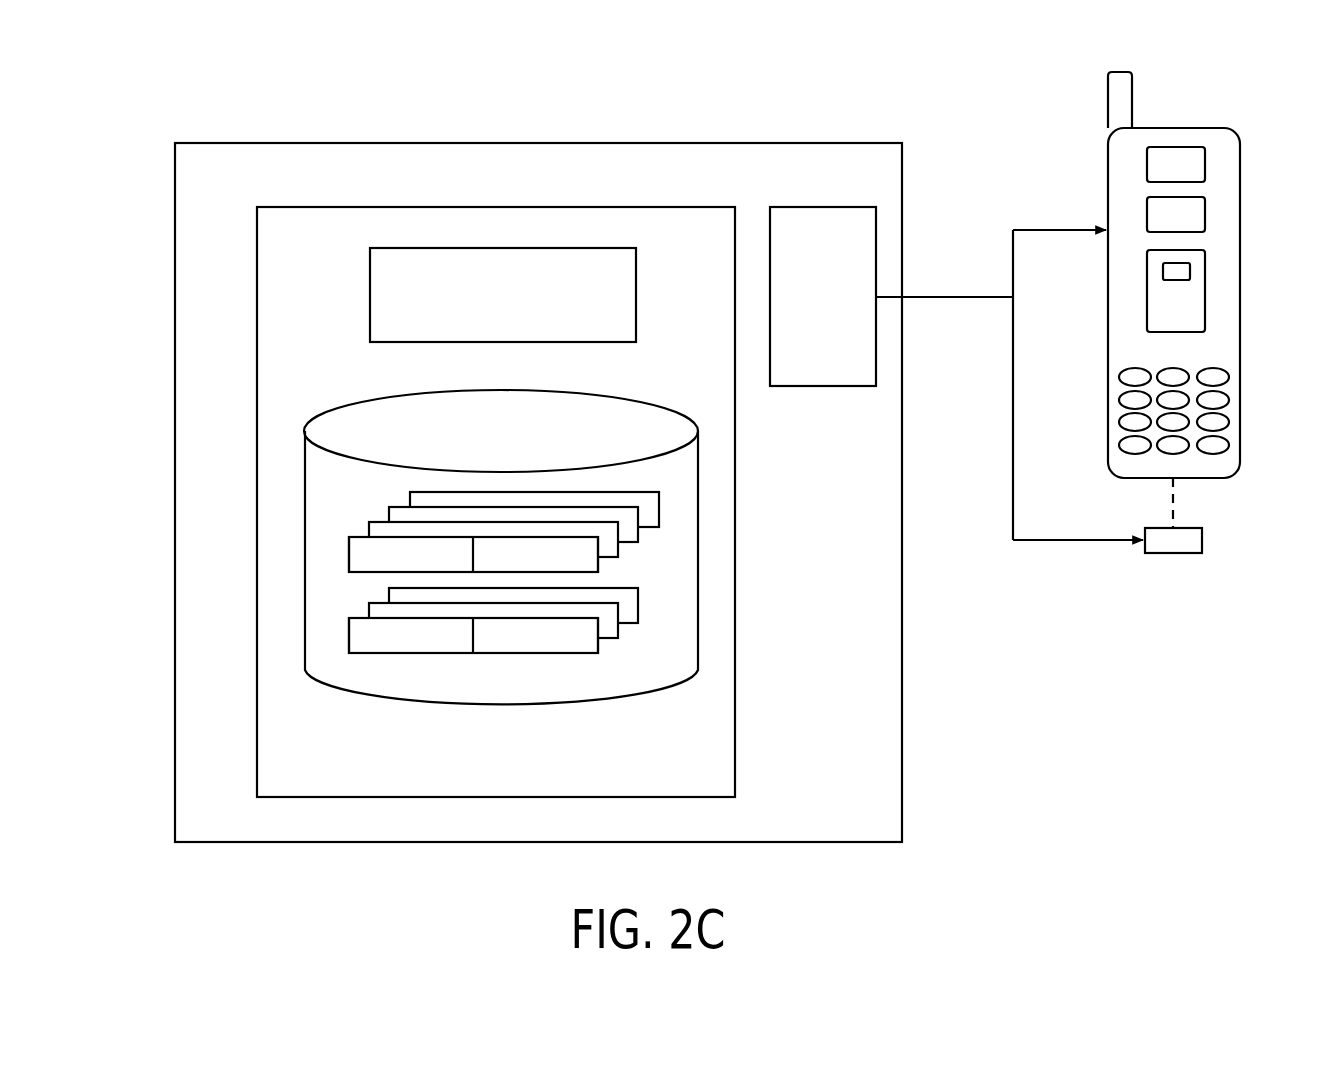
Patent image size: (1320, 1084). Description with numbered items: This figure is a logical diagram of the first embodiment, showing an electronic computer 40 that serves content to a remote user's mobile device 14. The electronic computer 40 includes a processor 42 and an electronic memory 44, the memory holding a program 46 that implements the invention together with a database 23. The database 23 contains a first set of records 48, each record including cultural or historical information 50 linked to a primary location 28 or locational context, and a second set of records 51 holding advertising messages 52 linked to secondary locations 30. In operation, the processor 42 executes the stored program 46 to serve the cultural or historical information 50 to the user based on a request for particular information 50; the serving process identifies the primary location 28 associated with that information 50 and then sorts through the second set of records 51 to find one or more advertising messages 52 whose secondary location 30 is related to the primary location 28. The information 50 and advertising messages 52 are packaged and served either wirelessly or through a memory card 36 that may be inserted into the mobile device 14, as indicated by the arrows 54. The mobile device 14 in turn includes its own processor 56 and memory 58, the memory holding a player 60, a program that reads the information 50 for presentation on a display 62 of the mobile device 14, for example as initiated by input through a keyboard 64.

The electronic computer 40 is at (538, 143).
The electronic memory 44 is at (257, 262).
The program 46 is at (370, 294).
The processor 42 is at (834, 304).
The database 23 is at (305, 470).
The first set of records 48 is at (460, 488).
The cultural or historical information 50 is at (418, 553).
The primary location 28 is at (545, 553).
The second set of records 51 is at (448, 680).
The advertising messages 52 is at (422, 633).
The secondary location 30 is at (535, 633).
The arrows 54 is at (1055, 215).
The mobile device 14 is at (1222, 166).
The display 62 is at (1167, 158).
The processor 56 is at (1190, 213).
The memory 58 is at (1205, 318).
The player 60 is at (1170, 278).
The keyboard 64 is at (1215, 420).
The memory card 36 is at (1203, 540).